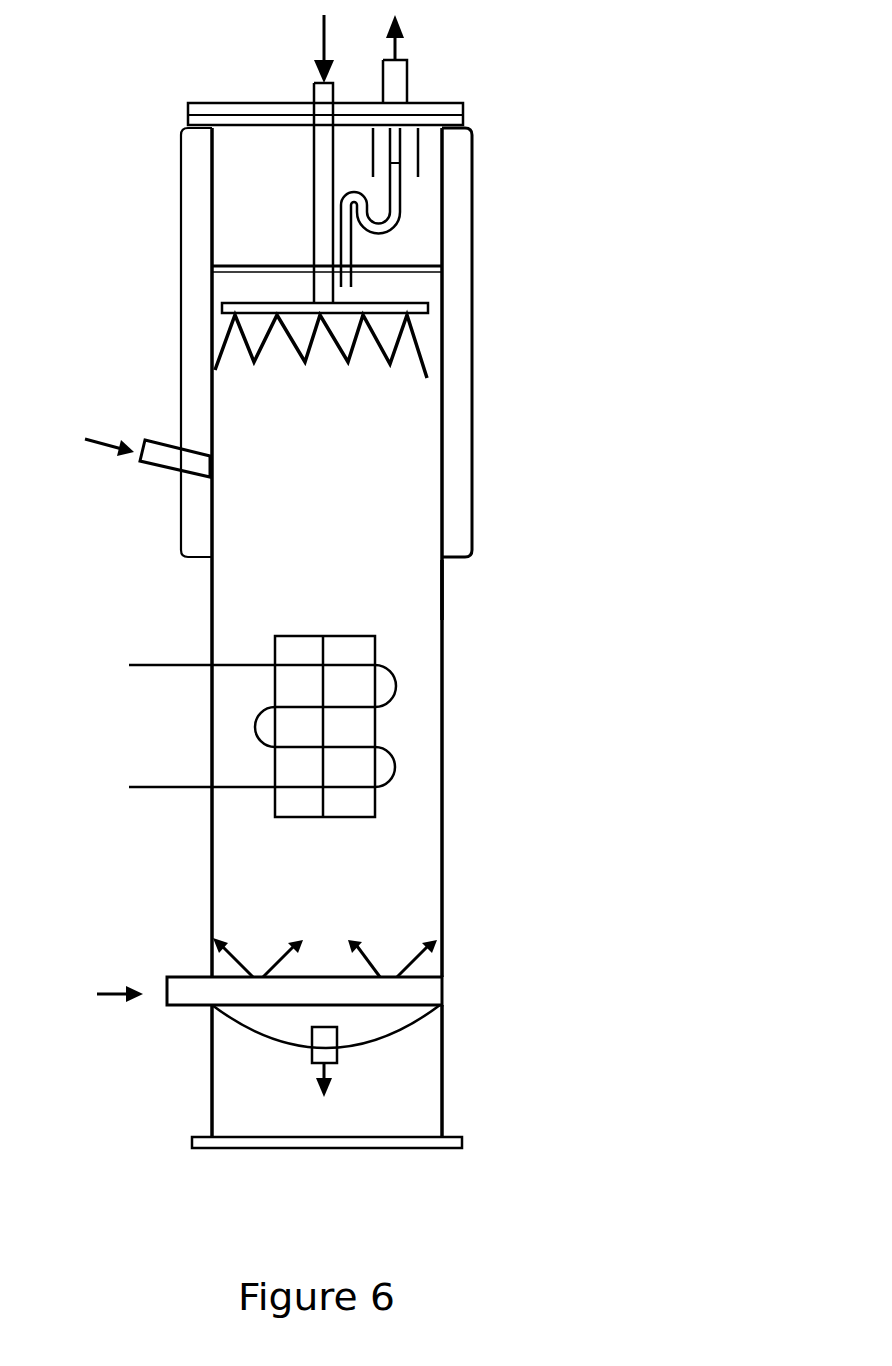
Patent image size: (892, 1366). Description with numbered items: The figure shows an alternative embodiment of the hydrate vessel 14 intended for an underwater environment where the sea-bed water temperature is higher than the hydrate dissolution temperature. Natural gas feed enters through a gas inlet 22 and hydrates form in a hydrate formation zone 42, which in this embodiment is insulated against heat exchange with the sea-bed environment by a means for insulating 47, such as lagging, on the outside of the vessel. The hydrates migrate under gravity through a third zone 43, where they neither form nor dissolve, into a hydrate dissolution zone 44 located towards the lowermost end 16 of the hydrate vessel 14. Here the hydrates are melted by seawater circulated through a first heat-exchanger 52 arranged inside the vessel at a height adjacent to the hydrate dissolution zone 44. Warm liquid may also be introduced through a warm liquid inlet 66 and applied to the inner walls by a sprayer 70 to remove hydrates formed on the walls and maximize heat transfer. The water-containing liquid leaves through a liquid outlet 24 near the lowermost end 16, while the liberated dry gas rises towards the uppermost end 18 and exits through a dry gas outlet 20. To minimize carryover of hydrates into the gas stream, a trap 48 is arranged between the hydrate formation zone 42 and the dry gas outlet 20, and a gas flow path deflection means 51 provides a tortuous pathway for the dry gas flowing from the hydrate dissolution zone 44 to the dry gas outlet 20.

The hydrate vessel 14 is at (640, 518).
The lowermost end 16 is at (518, 1050).
The uppermost end 18 is at (608, 109).
The dry gas outlet 20 is at (407, 60).
The gas inlet 22 is at (316, 82).
The liquid outlet 24 is at (343, 1064).
The hydrate formation zone 42 is at (348, 448).
The third zone 43 is at (367, 588).
The hydrate dissolution zone 44 is at (400, 728).
The means for insulating against heat exchange with the sea-bed environment 47 is at (180, 533).
The trap 48 is at (430, 261).
The gas flow path deflection means 51 is at (401, 210).
The first heat-exchanger 52 is at (278, 818).
The warm liquid inlet 66 is at (165, 995).
The sprayer 70 is at (424, 994).